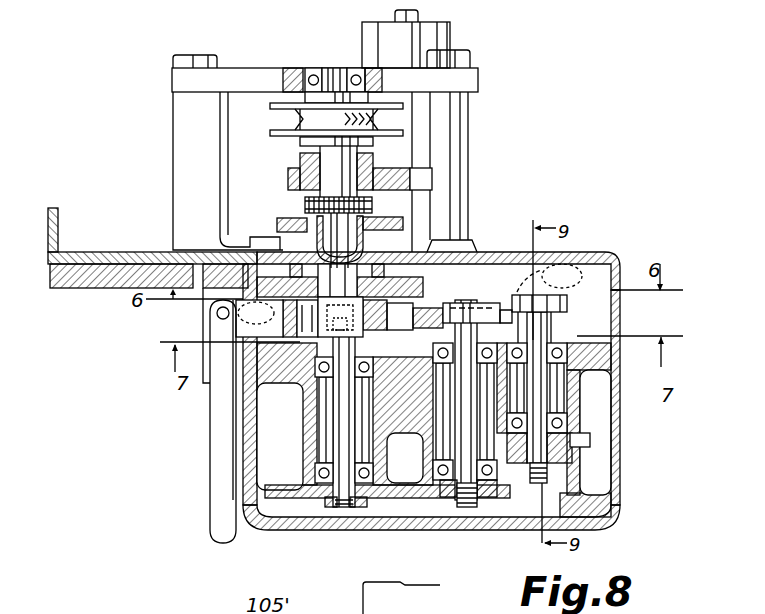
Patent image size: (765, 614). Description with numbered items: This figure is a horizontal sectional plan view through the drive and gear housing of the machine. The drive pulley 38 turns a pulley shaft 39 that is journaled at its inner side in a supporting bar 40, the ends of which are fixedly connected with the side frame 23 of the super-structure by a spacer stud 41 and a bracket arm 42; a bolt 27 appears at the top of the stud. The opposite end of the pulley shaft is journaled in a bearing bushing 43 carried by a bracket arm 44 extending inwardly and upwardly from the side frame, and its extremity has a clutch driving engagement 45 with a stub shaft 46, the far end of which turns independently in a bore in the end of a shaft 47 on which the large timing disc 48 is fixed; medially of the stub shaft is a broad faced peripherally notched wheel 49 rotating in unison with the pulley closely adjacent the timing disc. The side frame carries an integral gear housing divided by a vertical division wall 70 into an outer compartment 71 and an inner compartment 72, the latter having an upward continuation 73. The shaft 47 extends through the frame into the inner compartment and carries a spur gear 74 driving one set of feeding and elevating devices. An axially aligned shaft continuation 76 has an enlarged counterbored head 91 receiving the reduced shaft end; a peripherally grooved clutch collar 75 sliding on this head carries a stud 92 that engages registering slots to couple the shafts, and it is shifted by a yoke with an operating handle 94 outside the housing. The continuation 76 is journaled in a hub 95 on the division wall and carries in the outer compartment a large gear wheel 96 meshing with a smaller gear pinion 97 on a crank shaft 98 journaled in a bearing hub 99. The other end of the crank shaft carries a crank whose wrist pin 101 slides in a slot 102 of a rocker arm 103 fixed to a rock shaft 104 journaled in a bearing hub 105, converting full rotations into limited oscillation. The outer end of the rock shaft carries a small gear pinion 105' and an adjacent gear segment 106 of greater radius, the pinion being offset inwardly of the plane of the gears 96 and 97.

The side frame 23 is at (108, 262).
The motor bolt 27 is at (422, 13).
The pulley 38 is at (274, 113).
The pulley shaft 39 is at (328, 70).
The supporting bar 40 is at (264, 77).
The spacer stud 41 is at (458, 138).
The bracket arm 42 is at (188, 138).
The bearing bushing 43 is at (300, 156).
The bracket arm 44 is at (293, 180).
The clutch driving engagement 45 is at (360, 174).
The stub shaft 46 is at (307, 203).
The shaft 47 is at (363, 260).
The timing disc 48 is at (403, 221).
The peripherally notched wheel 49 is at (375, 203).
The division wall 70 is at (593, 372).
The outer compartment 71 is at (607, 473).
The inner compartment 72 is at (600, 318).
The upward continuation 73 is at (602, 252).
The spur gear 74 is at (421, 288).
The clutch collar 75 is at (372, 315).
The shaft continuation 76 is at (345, 505).
The counterbored head 91 is at (363, 350).
The stud 92 is at (286, 310).
The operating handle 94 is at (227, 469).
The hub 95 is at (310, 440).
The gear wheel 96 is at (293, 500).
The gear pinion 97 is at (442, 503).
The crank shaft 98 is at (473, 505).
The bearing hub 99 is at (430, 440).
The wrist pin 101 is at (452, 302).
The slot 102 is at (596, 258).
The rocker arm 103 is at (568, 301).
The rock shaft 104 is at (532, 487).
The bearing hub 105 is at (595, 387).
The gear pinion 105' is at (604, 497).
The gear segment 106 is at (593, 442).